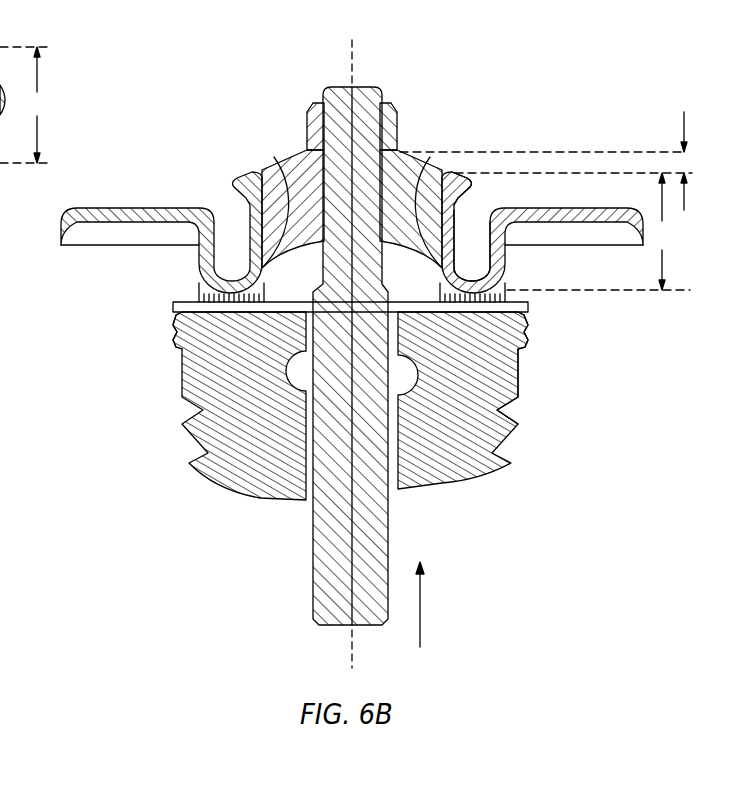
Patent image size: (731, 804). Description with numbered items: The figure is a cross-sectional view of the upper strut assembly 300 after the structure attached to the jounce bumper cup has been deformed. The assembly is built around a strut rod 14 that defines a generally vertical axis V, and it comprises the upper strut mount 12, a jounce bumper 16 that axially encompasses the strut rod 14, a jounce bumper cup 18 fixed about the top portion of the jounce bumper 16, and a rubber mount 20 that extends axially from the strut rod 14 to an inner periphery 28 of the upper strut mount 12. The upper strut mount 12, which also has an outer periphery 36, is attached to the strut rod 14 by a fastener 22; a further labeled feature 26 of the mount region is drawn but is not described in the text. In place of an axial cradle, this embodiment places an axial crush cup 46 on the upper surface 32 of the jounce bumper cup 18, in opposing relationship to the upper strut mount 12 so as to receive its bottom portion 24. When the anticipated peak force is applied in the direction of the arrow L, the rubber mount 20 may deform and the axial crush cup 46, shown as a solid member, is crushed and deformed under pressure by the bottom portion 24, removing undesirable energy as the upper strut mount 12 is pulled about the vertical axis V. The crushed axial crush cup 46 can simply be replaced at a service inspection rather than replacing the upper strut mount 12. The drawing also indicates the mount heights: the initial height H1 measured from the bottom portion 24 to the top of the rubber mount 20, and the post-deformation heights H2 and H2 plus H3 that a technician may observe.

The upper strut assembly 300 is at (354, 345).
The upper strut mount 12 is at (325, 232).
The strut rod 14 is at (284, 356).
The jounce bumper 16 is at (303, 406).
The jounce bumper cup 18 is at (302, 333).
The rubber mount 20 is at (313, 177).
The fastener 22 is at (392, 88).
The bottom portion 24 is at (522, 332).
The channel 26 is at (490, 195).
The inner periphery 28 is at (373, 175).
The upper surface 32 is at (298, 305).
The outer periphery 36 is at (525, 173).
The axial crush cup 46 is at (310, 278).
The vertical axis V is at (355, 338).
The arrow L is at (420, 622).
The initial height H1 is at (26, 105).
The height H2 is at (573, 231).
The height H3 is at (554, 141).